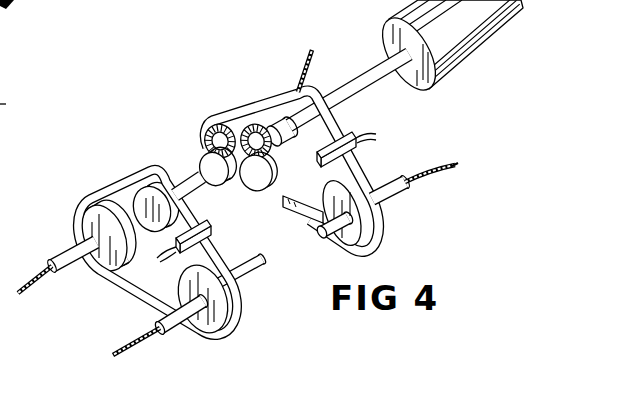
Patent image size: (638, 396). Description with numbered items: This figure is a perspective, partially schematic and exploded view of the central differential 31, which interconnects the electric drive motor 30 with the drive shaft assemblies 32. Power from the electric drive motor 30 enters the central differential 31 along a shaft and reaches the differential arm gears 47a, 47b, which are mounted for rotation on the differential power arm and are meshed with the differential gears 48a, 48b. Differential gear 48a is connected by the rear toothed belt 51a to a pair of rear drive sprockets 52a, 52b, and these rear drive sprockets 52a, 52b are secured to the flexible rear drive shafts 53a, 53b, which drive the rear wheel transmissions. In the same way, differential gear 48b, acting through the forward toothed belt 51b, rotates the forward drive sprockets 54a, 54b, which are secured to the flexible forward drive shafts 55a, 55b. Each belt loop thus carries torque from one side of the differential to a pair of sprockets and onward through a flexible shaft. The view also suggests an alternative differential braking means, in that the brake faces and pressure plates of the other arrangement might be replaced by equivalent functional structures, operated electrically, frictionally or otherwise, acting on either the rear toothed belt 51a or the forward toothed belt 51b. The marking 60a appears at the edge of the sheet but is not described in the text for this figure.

The electric drive motor 30 is at (447, 49).
The central differential 31 is at (258, 172).
The drive shaft assemblies 32 is at (66, 252).
The differential arm gear 47a is at (207, 136).
The differential arm gear 47b is at (243, 193).
The differential gear 48a is at (272, 148).
The differential gear 48b is at (201, 160).
The rear toothed belt 51a is at (336, 134).
The forward toothed belt 51b is at (214, 238).
The rear drive sprocket 52a is at (223, 114).
The rear drive sprocket 52b is at (370, 231).
The flexible rear drive shaft 53a is at (302, 70).
The flexible rear drive shaft 53b is at (422, 180).
The forward drive sprocket 54a is at (100, 265).
The forward drive sprocket 54b is at (237, 322).
The flexible forward drive shaft 55a is at (33, 285).
The flexible forward drive shaft 55b is at (117, 347).
The lever 60a is at (14, 106).